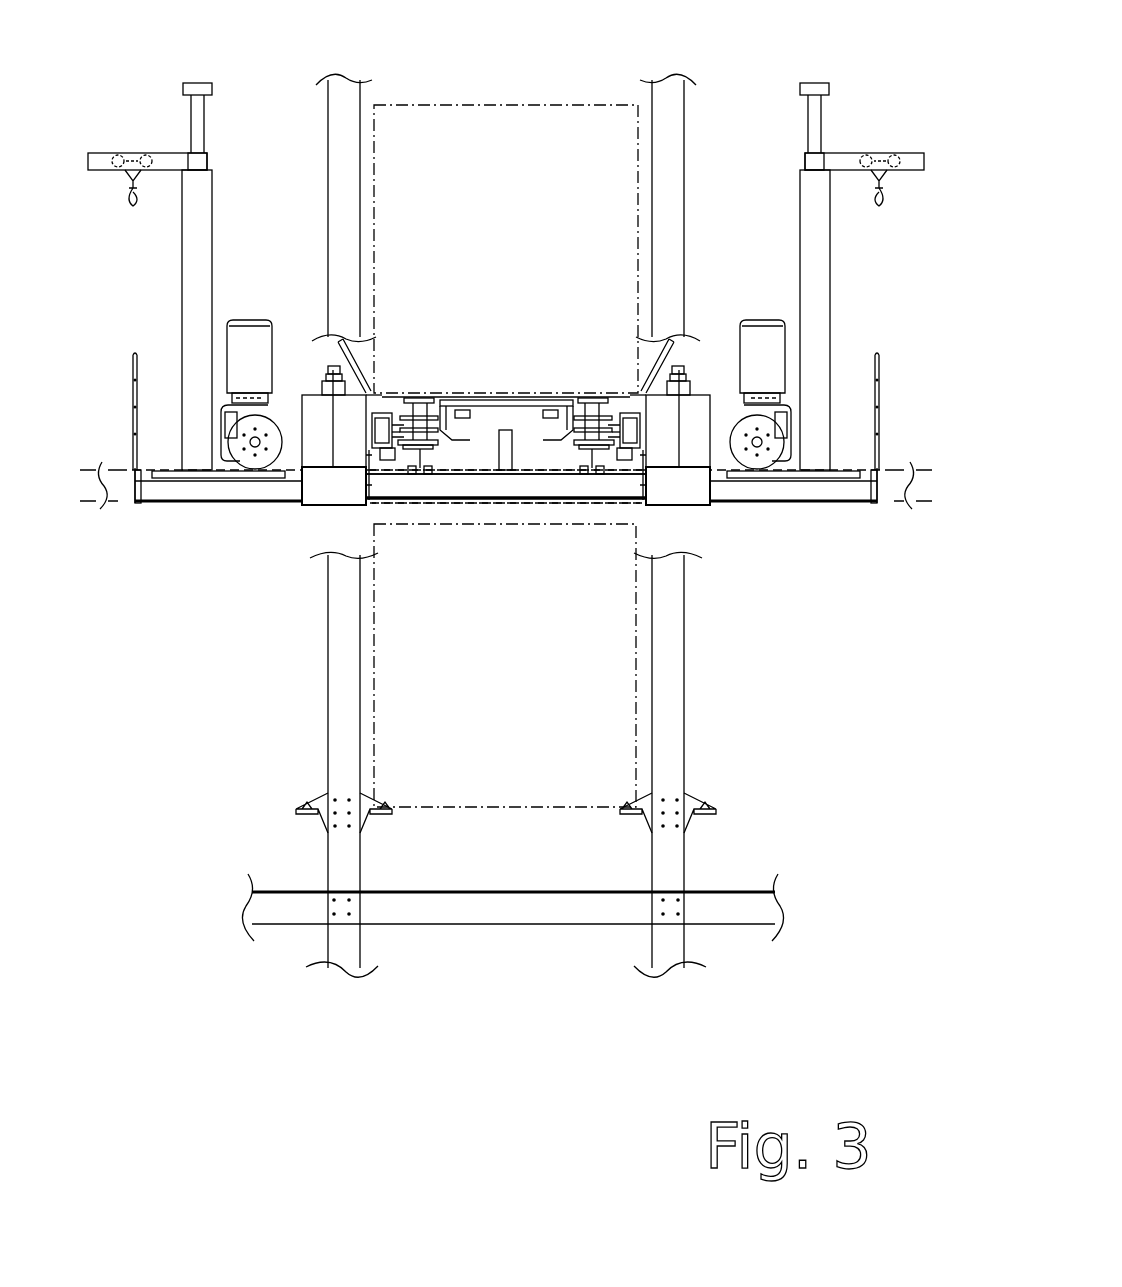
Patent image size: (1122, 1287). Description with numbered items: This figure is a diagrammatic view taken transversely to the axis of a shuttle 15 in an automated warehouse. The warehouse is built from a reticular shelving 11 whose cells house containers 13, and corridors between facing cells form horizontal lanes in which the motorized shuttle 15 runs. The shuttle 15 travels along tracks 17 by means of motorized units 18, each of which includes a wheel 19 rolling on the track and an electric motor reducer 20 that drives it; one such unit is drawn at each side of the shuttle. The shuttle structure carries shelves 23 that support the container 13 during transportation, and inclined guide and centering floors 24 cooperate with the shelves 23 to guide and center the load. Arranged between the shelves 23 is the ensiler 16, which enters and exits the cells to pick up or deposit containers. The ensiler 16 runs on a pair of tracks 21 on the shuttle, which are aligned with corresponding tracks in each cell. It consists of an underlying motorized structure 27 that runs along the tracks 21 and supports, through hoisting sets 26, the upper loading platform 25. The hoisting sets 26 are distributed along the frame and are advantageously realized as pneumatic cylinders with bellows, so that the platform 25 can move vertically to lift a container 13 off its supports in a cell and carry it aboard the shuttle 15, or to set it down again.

The shelving 11 is at (677, 87).
The container 13 is at (498, 112).
The motorized shuttle 15 is at (290, 542).
The ensiler 16 is at (531, 365).
The track 17 is at (918, 497).
The motorized unit 18 is at (512, 316).
The wheel 19 is at (248, 462).
The electric motor reducer 20 is at (233, 353).
The shuttle track 21 is at (436, 472).
The shelf 23 is at (381, 399).
The inclined guide and centering floor 24 is at (352, 360).
The upper loading platform 25 is at (455, 398).
The hoisting set 26 is at (429, 392).
The motorized structure 27 is at (490, 426).